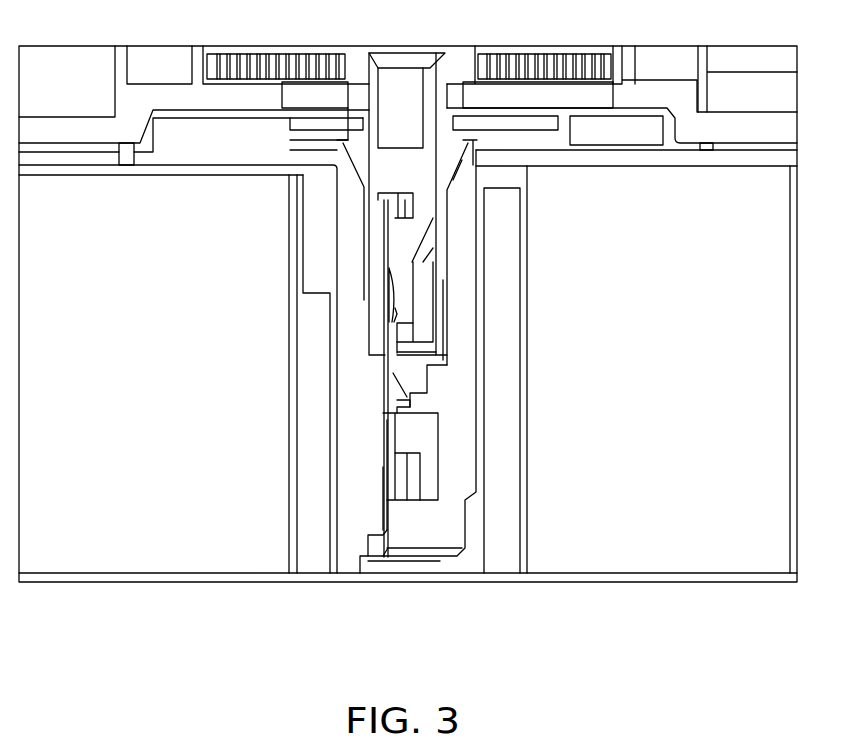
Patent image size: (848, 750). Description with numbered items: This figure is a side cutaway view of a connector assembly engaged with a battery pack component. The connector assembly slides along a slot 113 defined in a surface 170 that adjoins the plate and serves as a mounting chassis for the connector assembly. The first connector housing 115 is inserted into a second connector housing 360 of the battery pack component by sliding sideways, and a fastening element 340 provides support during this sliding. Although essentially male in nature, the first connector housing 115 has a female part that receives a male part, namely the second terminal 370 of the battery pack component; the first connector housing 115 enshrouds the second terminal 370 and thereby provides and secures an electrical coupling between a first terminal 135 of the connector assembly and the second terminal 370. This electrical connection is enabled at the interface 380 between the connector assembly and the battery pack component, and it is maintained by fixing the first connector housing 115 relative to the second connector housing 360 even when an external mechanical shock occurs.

The surface 170 is at (664, 92).
The slot 113 is at (453, 98).
The fastening element 340 is at (548, 118).
The first connector housing 115 is at (413, 177).
The first terminal 135 is at (403, 302).
The interface 380 is at (400, 325).
The second terminal 370 is at (388, 381).
The second connector housing 360 is at (355, 471).